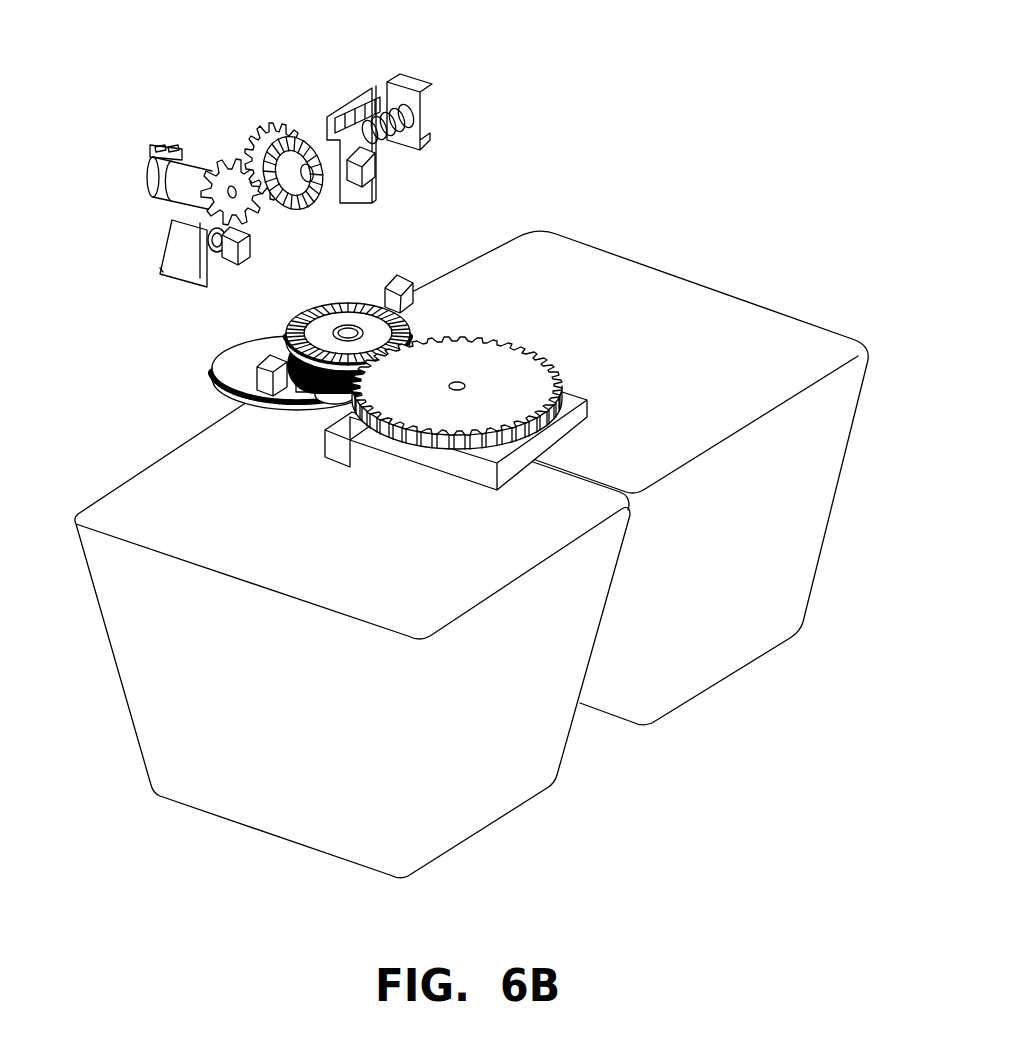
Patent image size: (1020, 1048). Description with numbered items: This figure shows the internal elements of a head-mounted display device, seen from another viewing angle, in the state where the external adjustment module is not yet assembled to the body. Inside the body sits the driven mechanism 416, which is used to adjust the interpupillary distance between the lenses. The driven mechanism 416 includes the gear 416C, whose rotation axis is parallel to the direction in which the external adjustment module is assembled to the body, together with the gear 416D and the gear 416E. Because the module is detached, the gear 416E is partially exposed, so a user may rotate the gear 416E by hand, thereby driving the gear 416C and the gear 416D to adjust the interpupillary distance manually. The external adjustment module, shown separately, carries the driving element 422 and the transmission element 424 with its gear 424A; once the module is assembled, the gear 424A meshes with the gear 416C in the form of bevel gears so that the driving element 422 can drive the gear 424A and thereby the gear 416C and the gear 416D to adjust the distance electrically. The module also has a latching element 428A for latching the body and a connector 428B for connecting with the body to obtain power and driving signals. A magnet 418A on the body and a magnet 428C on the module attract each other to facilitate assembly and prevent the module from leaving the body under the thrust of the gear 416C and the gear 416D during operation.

The driven mechanism 416 is at (482, 322).
The gear 416C is at (298, 319).
The gear 416D is at (323, 431).
The gear 416E is at (247, 363).
The magnet 418A is at (393, 276).
The driving element 422 is at (153, 175).
The transmission element 424 is at (237, 122).
The gear 424A is at (308, 122).
The latching element 428A is at (420, 103).
The connector 428B is at (352, 194).
The magnet 428C is at (372, 165).